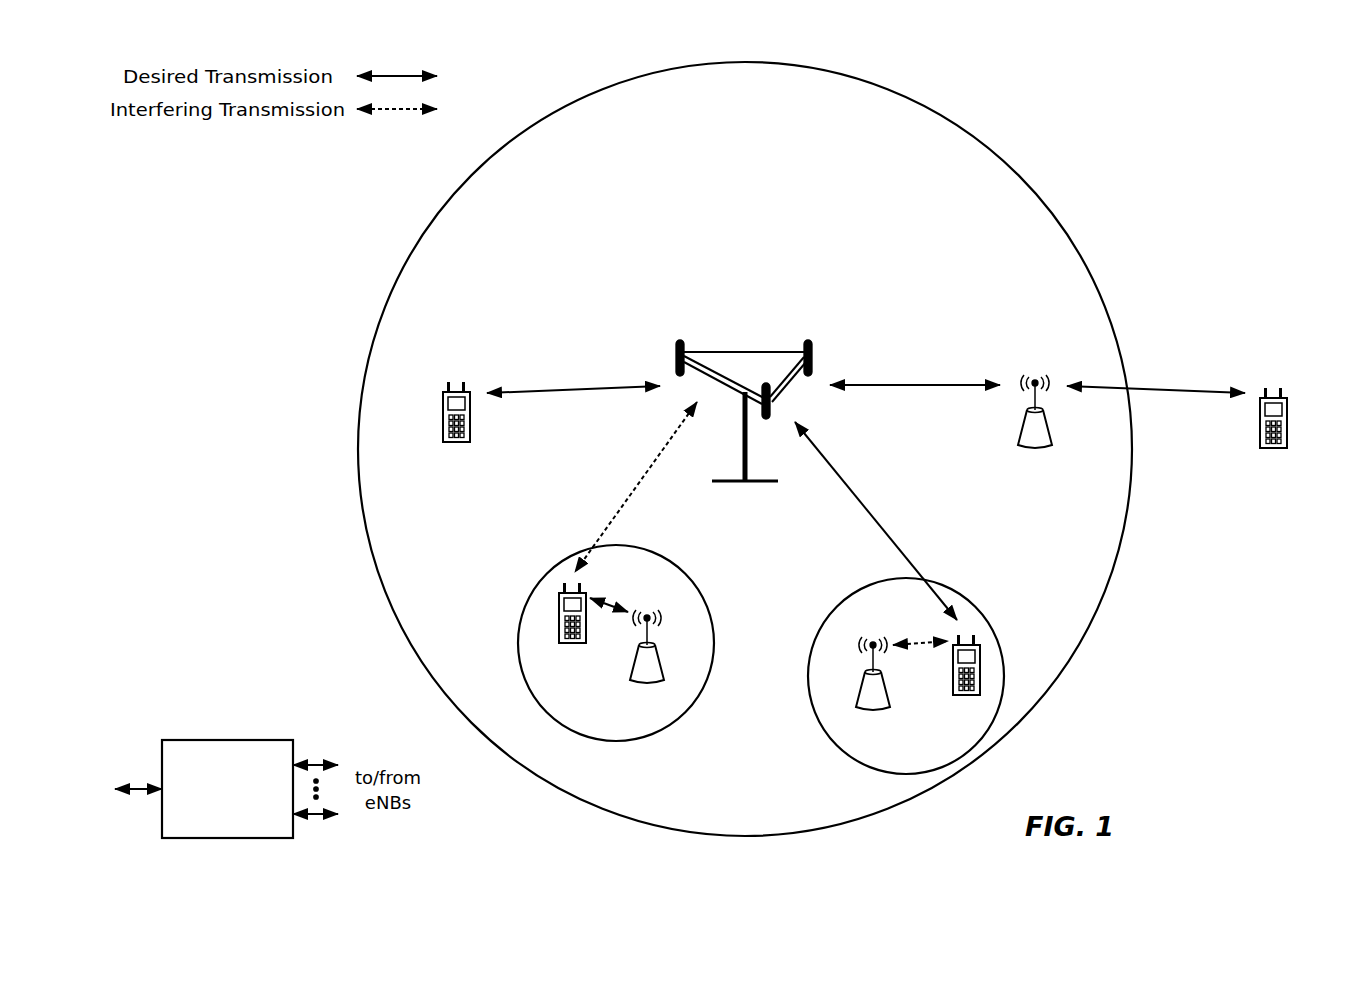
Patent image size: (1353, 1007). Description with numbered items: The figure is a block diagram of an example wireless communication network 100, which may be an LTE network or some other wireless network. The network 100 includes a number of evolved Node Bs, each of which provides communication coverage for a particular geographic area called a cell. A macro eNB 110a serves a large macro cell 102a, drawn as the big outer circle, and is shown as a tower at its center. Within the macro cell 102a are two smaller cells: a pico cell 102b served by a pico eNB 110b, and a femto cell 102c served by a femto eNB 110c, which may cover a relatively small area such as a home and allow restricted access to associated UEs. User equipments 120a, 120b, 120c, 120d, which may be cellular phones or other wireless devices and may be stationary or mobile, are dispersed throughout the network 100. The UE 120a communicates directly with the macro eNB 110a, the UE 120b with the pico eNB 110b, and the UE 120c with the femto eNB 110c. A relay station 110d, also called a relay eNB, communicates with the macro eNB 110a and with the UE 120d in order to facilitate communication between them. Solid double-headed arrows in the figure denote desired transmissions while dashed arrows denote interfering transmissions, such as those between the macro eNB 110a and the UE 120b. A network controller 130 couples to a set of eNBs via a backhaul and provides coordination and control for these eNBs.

The wireless communication network 100 is at (1200, 122).
The macro cell 102a is at (1003, 158).
The pico cell 102b is at (692, 579).
The femto cell 102c is at (834, 606).
The macro eNB 110a is at (742, 352).
The pico eNB 110b is at (673, 656).
The femto eNB 110c is at (858, 690).
The relay station 110d is at (1036, 381).
The UE 120a is at (443, 400).
The UE 120b is at (559, 640).
The UE 120c is at (953, 688).
The UE 120d is at (1287, 408).
The network controller 130 is at (222, 740).